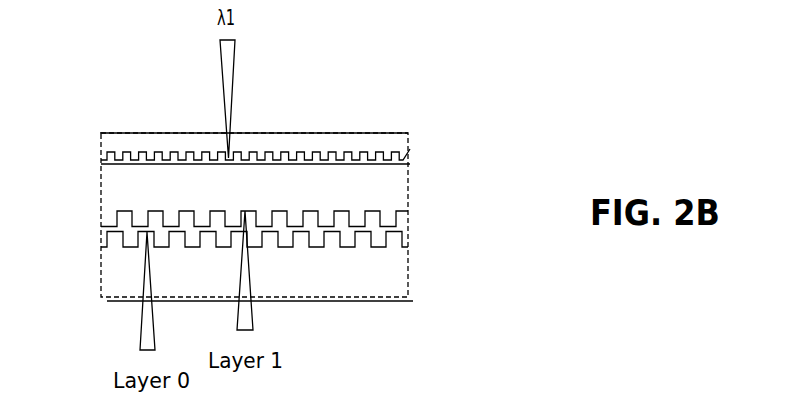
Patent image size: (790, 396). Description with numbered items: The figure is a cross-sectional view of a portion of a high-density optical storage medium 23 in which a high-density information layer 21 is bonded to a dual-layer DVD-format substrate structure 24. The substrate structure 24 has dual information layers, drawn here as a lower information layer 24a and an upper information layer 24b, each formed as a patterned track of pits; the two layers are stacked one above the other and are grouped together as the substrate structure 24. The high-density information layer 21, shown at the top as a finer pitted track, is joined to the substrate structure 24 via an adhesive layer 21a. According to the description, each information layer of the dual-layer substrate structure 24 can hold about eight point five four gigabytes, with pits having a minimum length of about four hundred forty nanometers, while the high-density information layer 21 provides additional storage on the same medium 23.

The high-density information layer 21 is at (281, 124).
The adhesive layer 21a is at (411, 148).
The multi-layer optical structure 23 is at (457, 52).
The DVD-9 substrate structure 24 is at (238, 230).
The layer 0 of second layer stack 24a is at (100, 240).
The layer 1 of second layer stack 24b is at (100, 218).